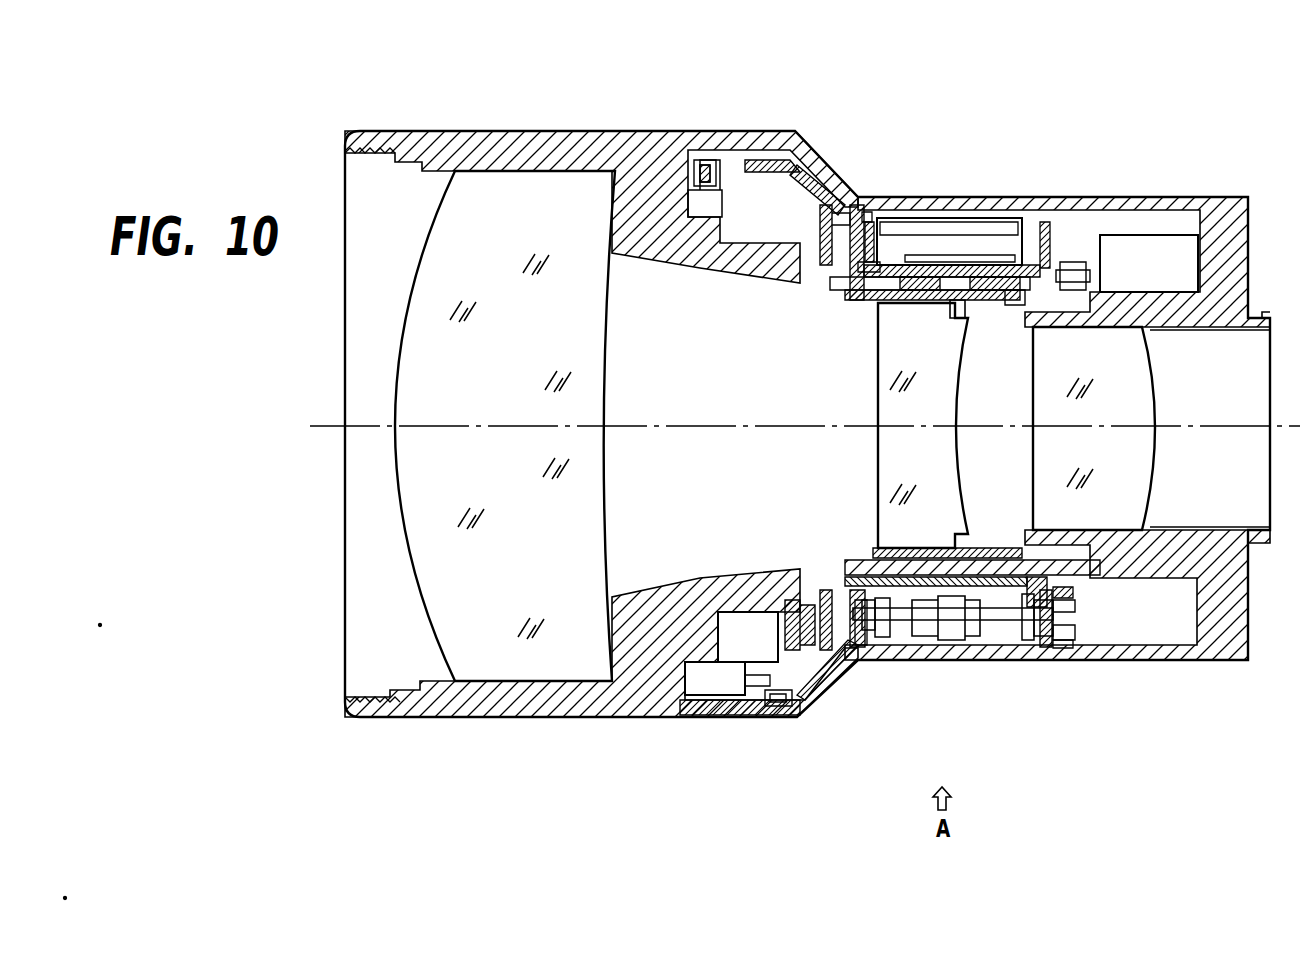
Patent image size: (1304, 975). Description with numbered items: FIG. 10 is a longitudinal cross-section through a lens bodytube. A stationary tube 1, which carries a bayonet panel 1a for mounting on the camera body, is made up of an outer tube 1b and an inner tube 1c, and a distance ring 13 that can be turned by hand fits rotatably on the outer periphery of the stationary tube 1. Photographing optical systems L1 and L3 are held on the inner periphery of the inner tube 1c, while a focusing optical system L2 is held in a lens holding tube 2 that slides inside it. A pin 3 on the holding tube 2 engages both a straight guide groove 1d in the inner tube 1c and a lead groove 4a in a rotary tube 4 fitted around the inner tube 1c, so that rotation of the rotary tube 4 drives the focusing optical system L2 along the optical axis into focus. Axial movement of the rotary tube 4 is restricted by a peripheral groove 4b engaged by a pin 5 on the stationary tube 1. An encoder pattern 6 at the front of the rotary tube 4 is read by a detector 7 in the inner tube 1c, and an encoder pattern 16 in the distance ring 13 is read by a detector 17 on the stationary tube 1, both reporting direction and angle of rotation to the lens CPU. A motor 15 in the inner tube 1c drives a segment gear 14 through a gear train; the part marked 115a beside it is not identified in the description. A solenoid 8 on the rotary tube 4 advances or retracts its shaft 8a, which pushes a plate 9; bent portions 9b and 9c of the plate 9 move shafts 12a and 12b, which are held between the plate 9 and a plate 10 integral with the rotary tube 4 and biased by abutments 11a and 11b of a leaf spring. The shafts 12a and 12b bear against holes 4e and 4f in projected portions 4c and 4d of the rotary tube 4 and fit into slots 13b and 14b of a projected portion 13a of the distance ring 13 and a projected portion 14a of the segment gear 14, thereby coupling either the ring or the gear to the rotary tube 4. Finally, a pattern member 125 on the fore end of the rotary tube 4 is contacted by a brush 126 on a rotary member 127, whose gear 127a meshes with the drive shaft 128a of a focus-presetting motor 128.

The stationary tube 1 is at (821, 398).
The bayonet panel 1a is at (1262, 325).
The rear wall of housing 1b is at (1212, 235).
The inner tube 1c is at (1090, 570).
The straight guide groove 1d is at (1015, 290).
The lens holding tube 2 is at (950, 218).
The pin 3 is at (968, 310).
The rotary tube 4 is at (955, 385).
The lead groove 4a is at (990, 278).
The peripheral groove 4b is at (925, 277).
The projected portion 4c is at (850, 570).
The projected portion 4d is at (1000, 548).
The hole 4e is at (840, 560).
The hole 4f is at (1037, 577).
The pin 5 is at (905, 255).
The pattern of encoder 6 is at (778, 708).
The detector 7 is at (703, 697).
The solenoid 8 is at (965, 222).
The shaft 8a is at (880, 222).
The plate 9 is at (870, 212).
The bent portion 9b is at (885, 660).
The bent portion 9c is at (1005, 660).
The plate 10 is at (925, 660).
The abutment 11a is at (955, 660).
The abutment 11b is at (985, 660).
The shaft 12a is at (866, 660).
The shaft 12b is at (1045, 660).
The distance ring 13 is at (779, 721).
The projected portion 13a is at (855, 700).
The slot 13b is at (822, 698).
The segment gear 14 is at (1085, 674).
The projected portion 14a is at (1058, 660).
The slot 14b is at (1068, 660).
The motor 15 is at (1140, 245).
The encoder pattern 16 is at (703, 160).
The detector 17 is at (690, 205).
The motor output shaft coupling 115a is at (1078, 262).
The pattern member 125 is at (830, 205).
The brush 126 is at (812, 168).
The rotary member 127 is at (790, 600).
The gear 127a is at (780, 165).
The motor for focus presetting 128 is at (740, 612).
The drive shaft 128a is at (808, 700).
The photographing optical system L1 is at (600, 382).
The focusing optical system L2 is at (885, 338).
The photographing optical system L3 is at (1040, 395).